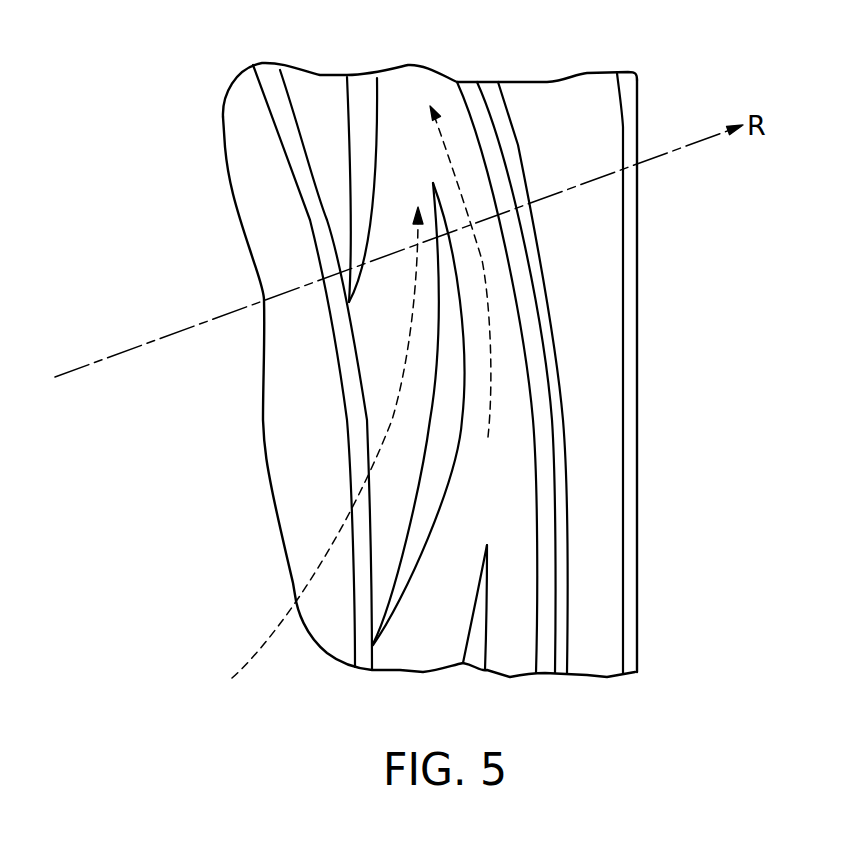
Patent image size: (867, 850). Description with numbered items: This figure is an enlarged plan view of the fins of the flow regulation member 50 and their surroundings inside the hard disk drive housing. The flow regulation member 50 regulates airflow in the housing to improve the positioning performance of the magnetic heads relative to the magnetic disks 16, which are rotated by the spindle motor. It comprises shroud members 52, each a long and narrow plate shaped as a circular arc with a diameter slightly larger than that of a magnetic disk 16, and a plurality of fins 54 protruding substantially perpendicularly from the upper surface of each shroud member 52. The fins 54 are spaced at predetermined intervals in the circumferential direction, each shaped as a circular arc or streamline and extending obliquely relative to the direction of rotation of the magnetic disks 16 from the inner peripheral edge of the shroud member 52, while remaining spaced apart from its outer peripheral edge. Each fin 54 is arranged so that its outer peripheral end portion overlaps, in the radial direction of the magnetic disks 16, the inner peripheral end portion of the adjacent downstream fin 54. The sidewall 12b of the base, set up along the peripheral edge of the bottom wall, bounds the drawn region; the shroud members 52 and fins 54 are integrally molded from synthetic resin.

The magnetic disk 16 is at (288, 452).
The sidewall 12b is at (610, 415).
The flow regulation member 50 is at (531, 478).
The shroud member 52 is at (517, 528).
The fin 54 is at (367, 110).